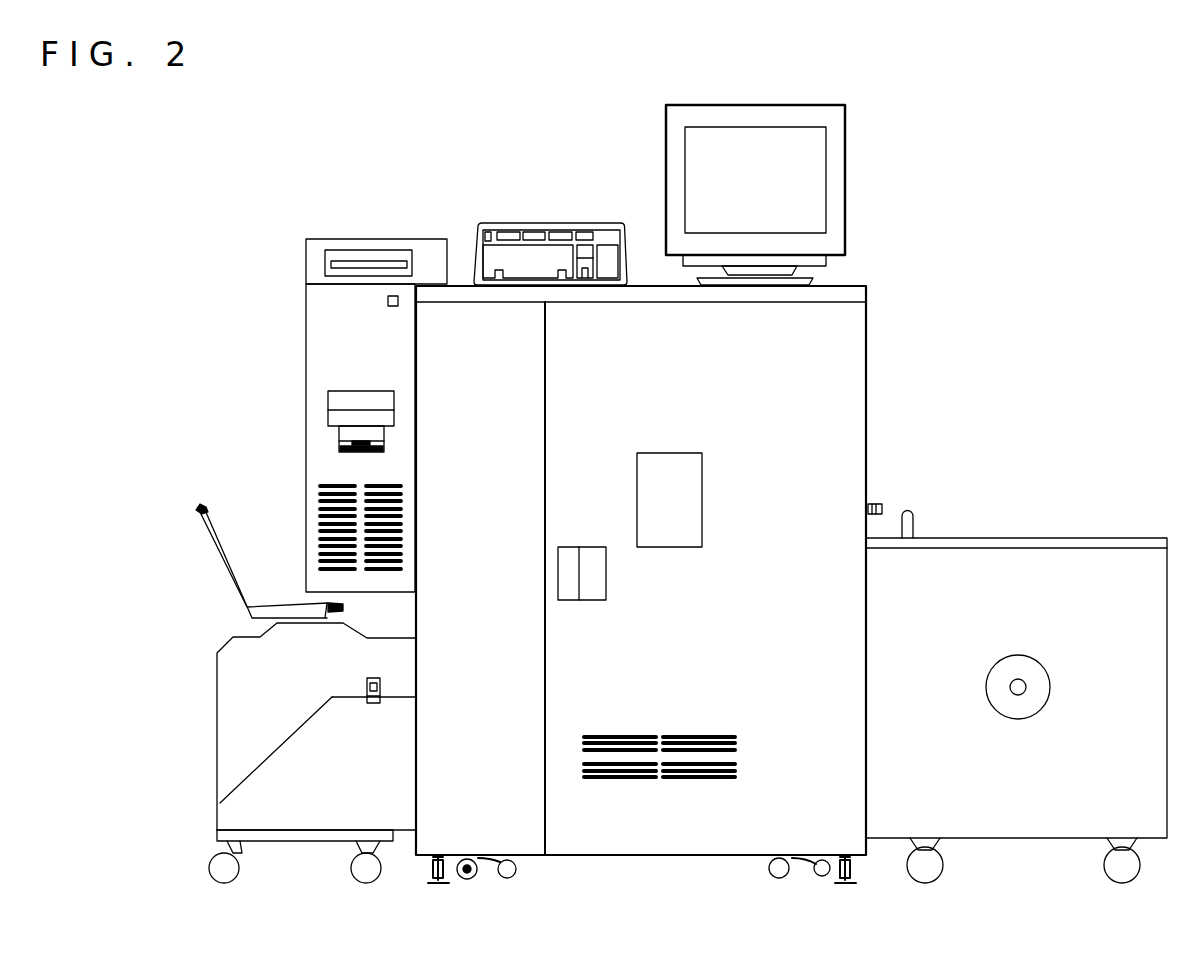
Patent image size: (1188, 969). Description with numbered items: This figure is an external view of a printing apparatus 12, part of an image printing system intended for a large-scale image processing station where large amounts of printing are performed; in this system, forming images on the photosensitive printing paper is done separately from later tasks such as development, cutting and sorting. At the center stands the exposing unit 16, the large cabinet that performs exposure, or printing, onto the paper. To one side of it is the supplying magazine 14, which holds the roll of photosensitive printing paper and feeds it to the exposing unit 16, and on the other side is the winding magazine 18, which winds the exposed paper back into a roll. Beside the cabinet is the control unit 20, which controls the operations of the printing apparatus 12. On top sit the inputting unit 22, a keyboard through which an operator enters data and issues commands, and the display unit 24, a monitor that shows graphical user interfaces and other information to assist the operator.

The printing apparatus 12 is at (244, 101).
The supplying magazine 14 is at (1053, 537).
The exposing unit 16 is at (866, 352).
The winding magazine 18 is at (217, 702).
The control unit 20 is at (347, 240).
The inputting unit 22 is at (548, 223).
The display unit 24 is at (845, 168).